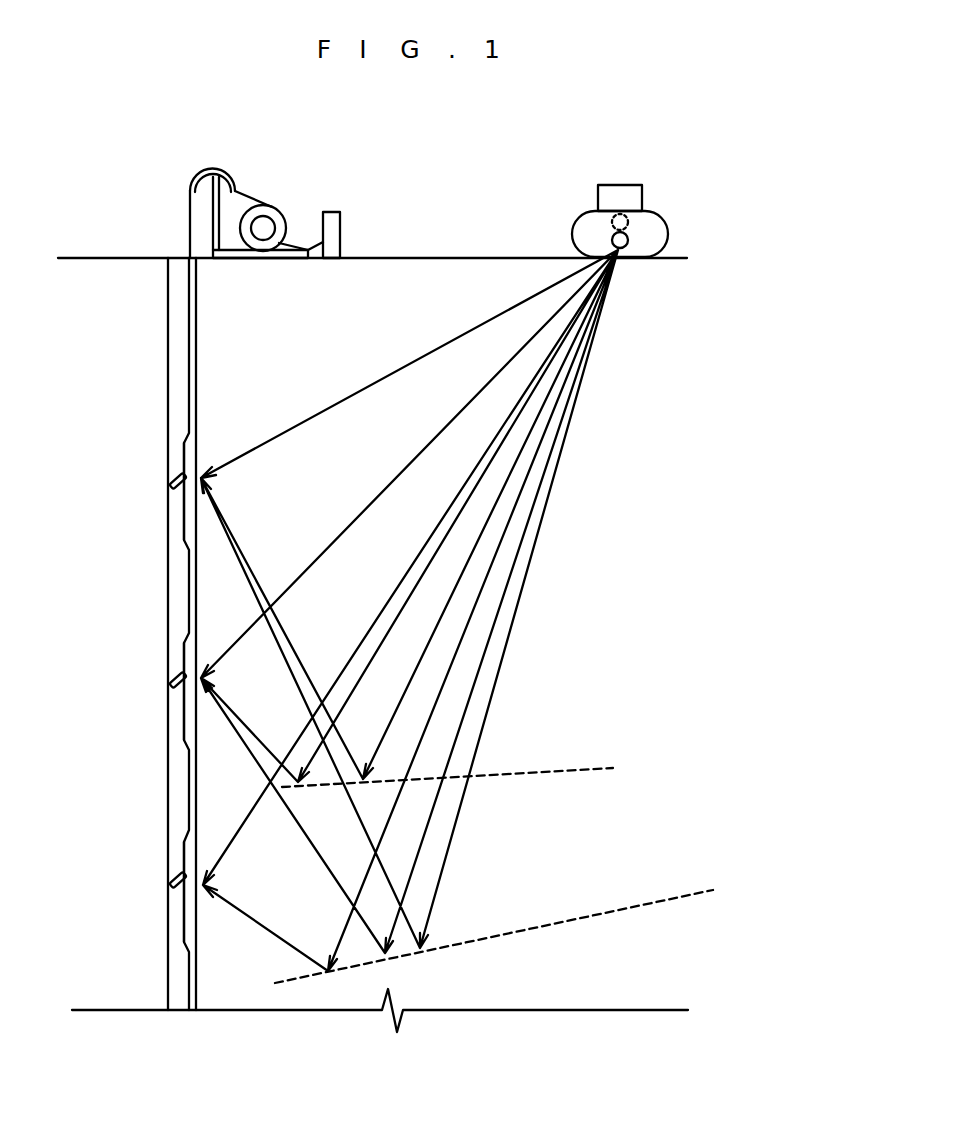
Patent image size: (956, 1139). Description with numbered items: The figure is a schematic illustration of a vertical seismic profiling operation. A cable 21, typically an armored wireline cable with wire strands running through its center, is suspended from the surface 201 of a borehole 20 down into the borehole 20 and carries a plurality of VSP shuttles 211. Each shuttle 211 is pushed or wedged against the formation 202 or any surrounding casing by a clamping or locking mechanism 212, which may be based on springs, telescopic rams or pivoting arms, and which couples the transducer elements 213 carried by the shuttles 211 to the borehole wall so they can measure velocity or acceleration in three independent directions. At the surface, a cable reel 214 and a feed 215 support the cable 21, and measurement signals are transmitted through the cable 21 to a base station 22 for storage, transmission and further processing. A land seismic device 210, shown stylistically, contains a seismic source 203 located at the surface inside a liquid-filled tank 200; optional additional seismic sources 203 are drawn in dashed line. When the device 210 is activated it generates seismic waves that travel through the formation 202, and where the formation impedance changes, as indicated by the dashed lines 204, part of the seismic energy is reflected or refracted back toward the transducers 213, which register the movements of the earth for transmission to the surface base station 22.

The borehole 20 is at (122, 388).
The cable 21 is at (189, 222).
The base station 22 is at (342, 230).
The liquid-filled tank 200 is at (672, 234).
The surface 201 is at (446, 256).
The formation 202 is at (266, 521).
The seismic source 203 is at (609, 223).
The dashed lines 204 is at (558, 775).
The land seismic device 210 is at (627, 182).
The VSP shuttles 211 is at (183, 918).
The clamping or locking mechanism 212 is at (172, 877).
The transducer elements 213 is at (207, 895).
The cable reel 214 is at (279, 212).
The feed 215 is at (231, 176).